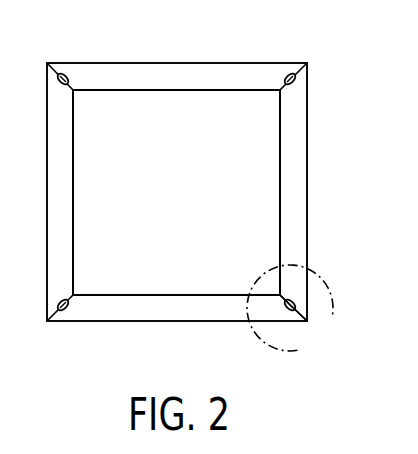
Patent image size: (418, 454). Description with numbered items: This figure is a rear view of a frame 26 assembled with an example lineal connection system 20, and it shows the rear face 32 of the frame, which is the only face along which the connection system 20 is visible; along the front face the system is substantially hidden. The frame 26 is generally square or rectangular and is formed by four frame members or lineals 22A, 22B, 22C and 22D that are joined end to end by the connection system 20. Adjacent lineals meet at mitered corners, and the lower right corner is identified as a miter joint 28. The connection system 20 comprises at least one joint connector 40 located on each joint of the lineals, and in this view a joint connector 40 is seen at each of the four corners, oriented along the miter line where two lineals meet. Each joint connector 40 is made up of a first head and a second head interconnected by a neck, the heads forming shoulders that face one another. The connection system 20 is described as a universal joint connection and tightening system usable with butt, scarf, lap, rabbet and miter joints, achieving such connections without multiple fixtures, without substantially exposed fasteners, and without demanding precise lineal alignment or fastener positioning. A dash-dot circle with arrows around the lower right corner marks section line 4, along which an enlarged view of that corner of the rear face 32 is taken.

The frame 26 is at (30, 81).
The lineal 22A is at (174, 321).
The lineal 22B is at (307, 192).
The lineal 22C is at (176, 63).
The lineal 22D is at (47, 192).
The rear face 32 is at (322, 81).
The joint connector 40 is at (67, 76).
The miter joint 28 is at (309, 318).
The lineal connection system 20 is at (336, 272).
The section line 4- 4 is at (301, 324).